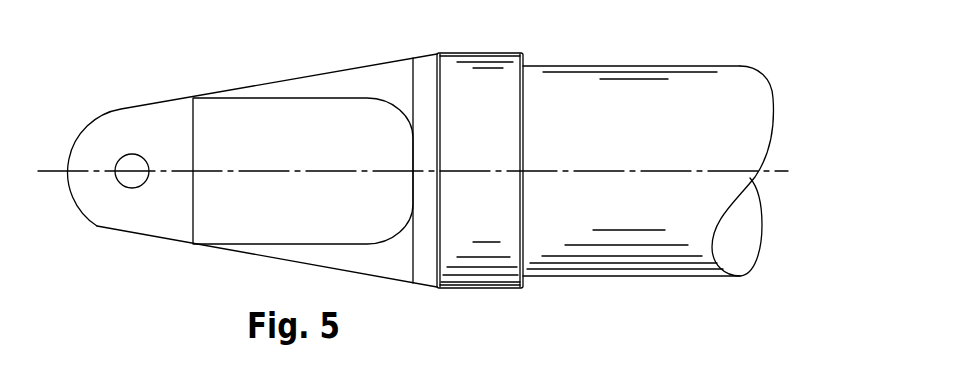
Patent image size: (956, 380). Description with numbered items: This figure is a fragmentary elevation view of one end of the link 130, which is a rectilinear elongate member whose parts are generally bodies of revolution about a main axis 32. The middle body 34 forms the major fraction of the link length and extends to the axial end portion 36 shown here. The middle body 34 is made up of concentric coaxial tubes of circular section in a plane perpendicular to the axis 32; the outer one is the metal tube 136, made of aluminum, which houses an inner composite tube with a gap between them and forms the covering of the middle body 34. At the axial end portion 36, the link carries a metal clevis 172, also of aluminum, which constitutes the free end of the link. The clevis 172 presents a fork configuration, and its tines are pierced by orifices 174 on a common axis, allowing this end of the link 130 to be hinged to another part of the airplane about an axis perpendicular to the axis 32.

The link 130 is at (440, 171).
The main axis 32 is at (668, 199).
The middle body 34 is at (677, 241).
The axial end portion 36 is at (164, 221).
The metal tube 136 is at (579, 122).
The metal clevis 172 is at (346, 104).
The orifice 174 is at (125, 185).